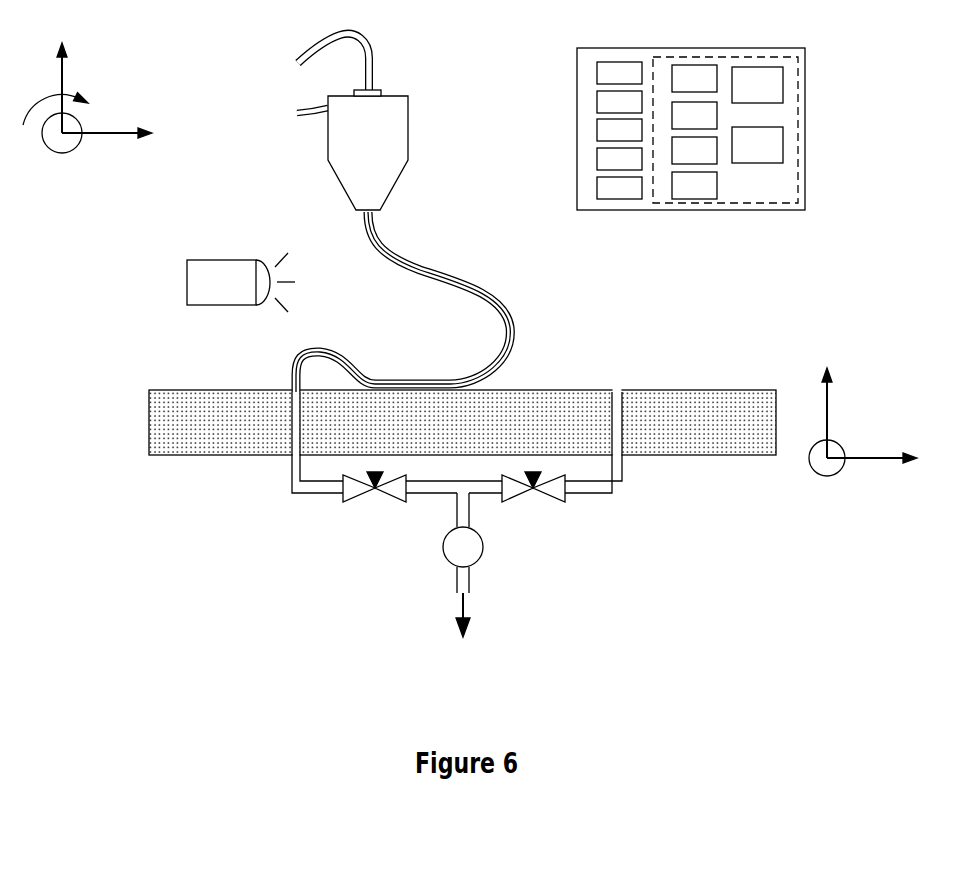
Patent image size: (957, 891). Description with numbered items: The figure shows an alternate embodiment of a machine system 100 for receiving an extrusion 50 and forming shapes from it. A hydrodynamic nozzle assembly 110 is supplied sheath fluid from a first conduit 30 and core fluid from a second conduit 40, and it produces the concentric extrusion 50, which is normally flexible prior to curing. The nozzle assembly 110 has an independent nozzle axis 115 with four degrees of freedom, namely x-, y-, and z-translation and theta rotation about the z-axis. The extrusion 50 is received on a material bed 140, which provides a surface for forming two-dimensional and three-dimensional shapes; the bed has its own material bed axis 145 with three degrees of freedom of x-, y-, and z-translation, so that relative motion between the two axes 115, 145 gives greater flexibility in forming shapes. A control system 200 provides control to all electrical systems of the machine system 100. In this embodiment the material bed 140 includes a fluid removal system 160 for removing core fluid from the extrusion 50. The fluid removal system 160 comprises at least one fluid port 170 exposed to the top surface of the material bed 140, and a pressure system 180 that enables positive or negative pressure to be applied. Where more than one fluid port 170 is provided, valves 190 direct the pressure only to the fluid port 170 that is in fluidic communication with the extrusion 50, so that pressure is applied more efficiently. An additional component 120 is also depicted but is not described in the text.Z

The machine system 100 is at (223, 571).
The hydrodynamic nozzle assembly 110 is at (408, 115).
The nozzle axis 115 is at (113, 70).
The light source / heater 120 is at (227, 260).
The material bed 140 is at (462, 422).
The material bed axis 145 is at (825, 492).
The fluid removal system 160 is at (537, 532).
The fluid port 170 is at (292, 417).
The pressure system 180 is at (447, 560).
The valve 190 is at (395, 497).
The control system 200 is at (748, 212).
The first conduit 30 is at (372, 55).
The second conduit 40 is at (307, 107).
The extrusion 50 is at (510, 322).